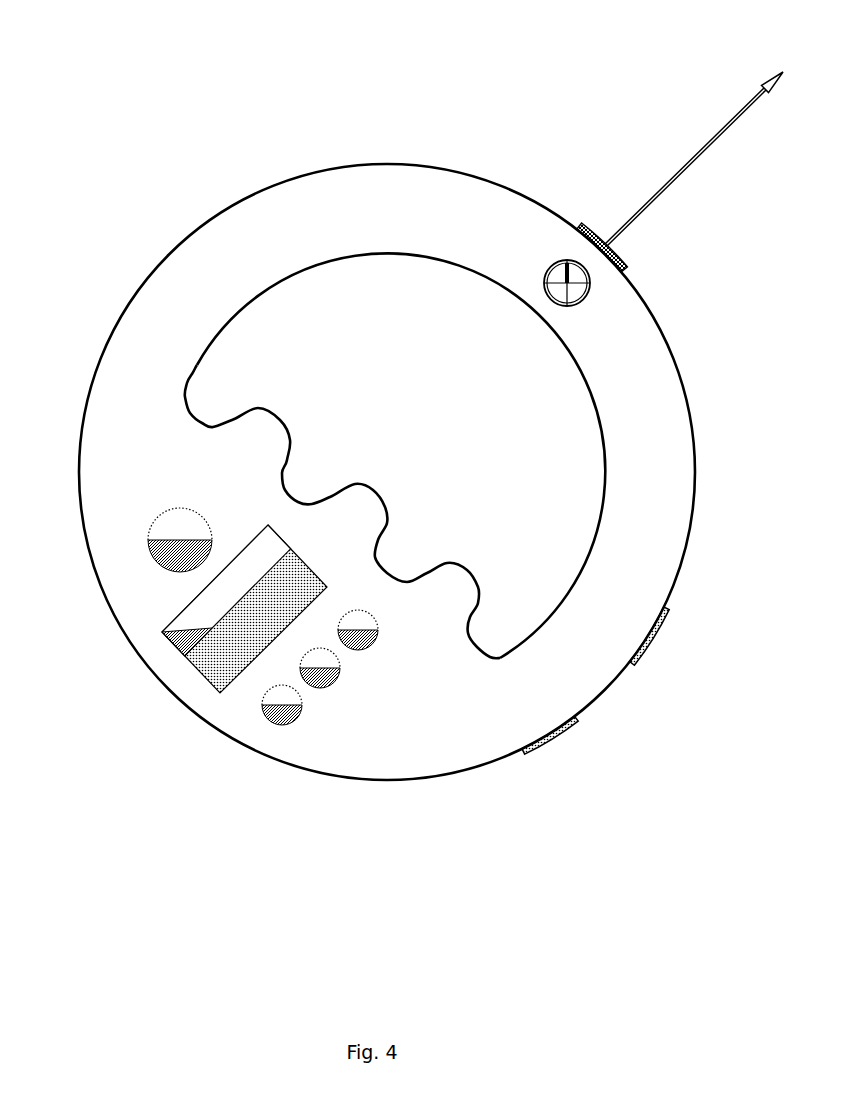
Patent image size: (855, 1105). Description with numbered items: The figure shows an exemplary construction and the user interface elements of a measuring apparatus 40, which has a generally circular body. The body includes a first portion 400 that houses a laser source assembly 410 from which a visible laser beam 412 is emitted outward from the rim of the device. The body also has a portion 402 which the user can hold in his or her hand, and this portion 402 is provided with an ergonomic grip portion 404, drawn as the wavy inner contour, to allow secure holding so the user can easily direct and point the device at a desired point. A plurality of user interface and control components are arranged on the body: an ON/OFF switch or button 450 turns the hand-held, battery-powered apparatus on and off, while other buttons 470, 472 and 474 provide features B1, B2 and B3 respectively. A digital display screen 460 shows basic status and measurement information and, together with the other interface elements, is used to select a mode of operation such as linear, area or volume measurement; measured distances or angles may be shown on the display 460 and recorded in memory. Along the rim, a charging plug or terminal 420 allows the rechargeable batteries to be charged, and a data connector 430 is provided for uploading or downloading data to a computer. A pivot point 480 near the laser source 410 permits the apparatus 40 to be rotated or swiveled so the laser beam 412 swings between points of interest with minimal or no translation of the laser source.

The measuring apparatus 40 is at (152, 59).
The first portion 400 is at (400, 193).
The hand-held portion 402 is at (99, 431).
The ergonomic grip portion 404 is at (363, 471).
The laser source assembly 410 is at (586, 214).
The visible laser beam 412 is at (691, 136).
The charging plug or terminal 420 is at (665, 652).
The data connector 430 is at (566, 758).
The ON/OFF switch or button 450 is at (141, 574).
The digital display screen 460 is at (187, 672).
The button 470 is at (291, 746).
The button 472 is at (329, 709).
The button 474 is at (375, 662).
The pivot point 480 is at (601, 311).